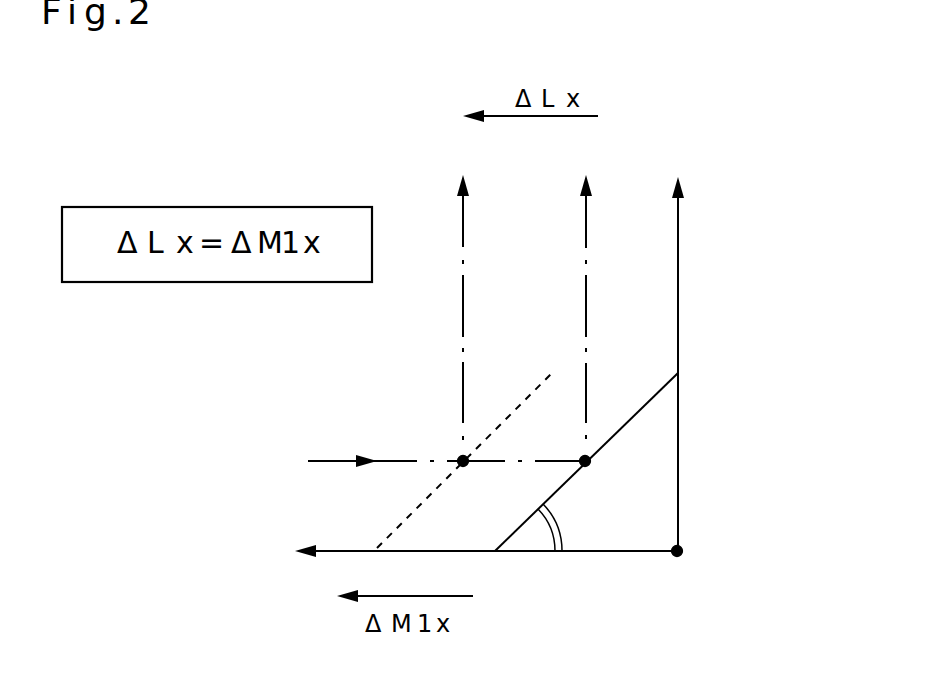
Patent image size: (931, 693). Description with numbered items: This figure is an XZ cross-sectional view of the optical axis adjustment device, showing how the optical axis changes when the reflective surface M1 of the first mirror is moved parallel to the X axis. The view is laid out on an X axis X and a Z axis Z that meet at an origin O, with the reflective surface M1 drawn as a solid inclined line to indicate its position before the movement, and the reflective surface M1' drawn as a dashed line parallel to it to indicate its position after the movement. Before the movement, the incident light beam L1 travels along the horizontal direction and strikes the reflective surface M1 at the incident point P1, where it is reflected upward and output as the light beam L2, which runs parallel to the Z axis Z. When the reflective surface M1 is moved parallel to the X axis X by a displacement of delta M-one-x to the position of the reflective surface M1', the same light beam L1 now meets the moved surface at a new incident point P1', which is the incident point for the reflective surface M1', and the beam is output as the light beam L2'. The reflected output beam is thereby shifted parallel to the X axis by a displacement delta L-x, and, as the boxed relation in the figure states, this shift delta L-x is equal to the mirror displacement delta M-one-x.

The light beam L1 is at (425, 461).
The light beam L2 is at (587, 292).
The light beam L2' is at (466, 293).
The reflective surface M1 is at (644, 462).
The reflective surface M1' is at (466, 427).
The incident point P1 is at (620, 472).
The incident point P1' is at (471, 491).
The X axis X is at (470, 550).
The Z axis Z is at (691, 353).
The origin O is at (684, 568).